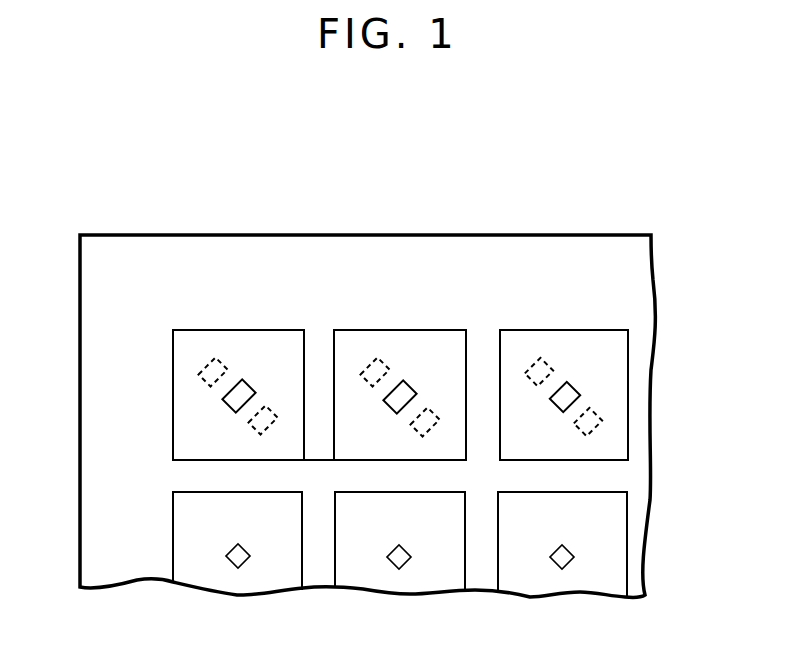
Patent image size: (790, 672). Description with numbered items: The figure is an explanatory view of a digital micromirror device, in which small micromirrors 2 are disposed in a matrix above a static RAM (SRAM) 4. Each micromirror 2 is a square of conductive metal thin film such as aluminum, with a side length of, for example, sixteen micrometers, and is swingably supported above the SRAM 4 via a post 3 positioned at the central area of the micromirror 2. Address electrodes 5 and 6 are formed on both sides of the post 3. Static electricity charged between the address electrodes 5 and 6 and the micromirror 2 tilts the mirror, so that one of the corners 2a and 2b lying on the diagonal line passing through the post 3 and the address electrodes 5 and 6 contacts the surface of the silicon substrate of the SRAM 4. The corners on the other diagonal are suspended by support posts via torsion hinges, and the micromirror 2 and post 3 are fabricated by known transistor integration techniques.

The micromirror 2 is at (370, 338).
The corner of micromirror 2a is at (173, 330).
The corner of micromirror 2b is at (308, 461).
The post 3 is at (243, 386).
The static RAM (SRAM) 4 is at (172, 206).
The address electrode 5 is at (215, 360).
The address electrode 6 is at (256, 428).